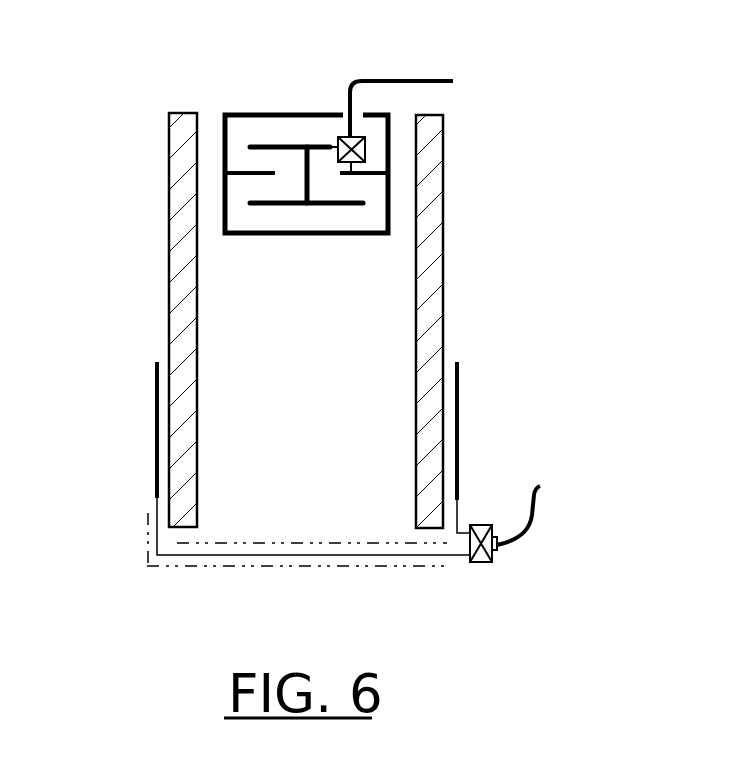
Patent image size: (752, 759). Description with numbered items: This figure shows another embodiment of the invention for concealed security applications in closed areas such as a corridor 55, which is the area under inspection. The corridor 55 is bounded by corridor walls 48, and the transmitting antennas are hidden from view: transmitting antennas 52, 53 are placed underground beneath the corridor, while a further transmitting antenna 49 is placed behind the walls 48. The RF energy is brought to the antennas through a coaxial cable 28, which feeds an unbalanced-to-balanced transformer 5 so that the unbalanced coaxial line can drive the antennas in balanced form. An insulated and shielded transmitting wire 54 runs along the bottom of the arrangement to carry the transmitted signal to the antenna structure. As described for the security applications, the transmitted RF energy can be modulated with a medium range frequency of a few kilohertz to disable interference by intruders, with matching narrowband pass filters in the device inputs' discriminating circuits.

The unbalanced-to-balanced transformer 5 is at (338, 138).
The coaxial cable 28 is at (397, 80).
The corridor walls 48 is at (443, 165).
The transmitting antenna 49 is at (157, 385).
The transmitting antenna 52 is at (283, 143).
The transmitting antenna 53 is at (227, 113).
The insulated and shielded transmitting wire 54 is at (422, 567).
The area under inspection/corridor 55 is at (303, 390).